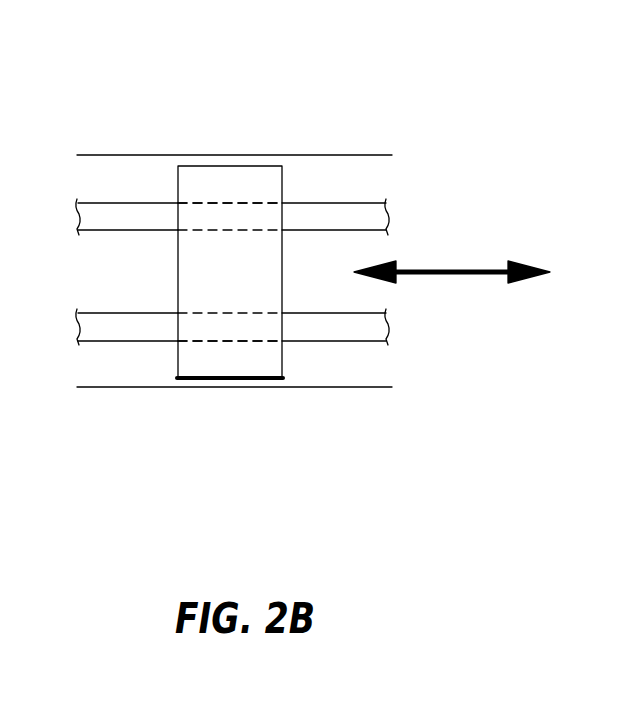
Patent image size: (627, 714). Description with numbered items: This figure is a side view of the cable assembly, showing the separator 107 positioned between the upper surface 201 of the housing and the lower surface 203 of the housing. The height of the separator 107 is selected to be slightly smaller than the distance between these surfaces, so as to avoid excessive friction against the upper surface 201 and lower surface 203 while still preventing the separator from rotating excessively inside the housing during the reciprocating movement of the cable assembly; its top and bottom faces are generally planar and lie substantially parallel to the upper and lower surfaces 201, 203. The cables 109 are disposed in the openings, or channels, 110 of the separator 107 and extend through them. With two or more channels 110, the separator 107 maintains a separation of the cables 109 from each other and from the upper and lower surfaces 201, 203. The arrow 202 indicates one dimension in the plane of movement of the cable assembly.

The separator 107 is at (227, 166).
The cables 109 is at (348, 203).
The openings or channels 110 is at (205, 200).
The upper surface of the housing 201 is at (350, 155).
The arrow 202 is at (457, 270).
The lower surface of the housing 203 is at (333, 387).